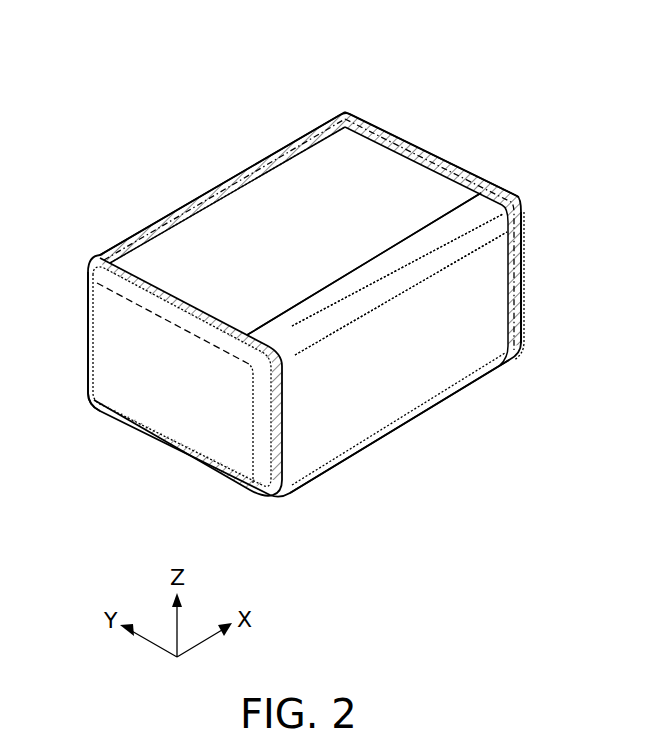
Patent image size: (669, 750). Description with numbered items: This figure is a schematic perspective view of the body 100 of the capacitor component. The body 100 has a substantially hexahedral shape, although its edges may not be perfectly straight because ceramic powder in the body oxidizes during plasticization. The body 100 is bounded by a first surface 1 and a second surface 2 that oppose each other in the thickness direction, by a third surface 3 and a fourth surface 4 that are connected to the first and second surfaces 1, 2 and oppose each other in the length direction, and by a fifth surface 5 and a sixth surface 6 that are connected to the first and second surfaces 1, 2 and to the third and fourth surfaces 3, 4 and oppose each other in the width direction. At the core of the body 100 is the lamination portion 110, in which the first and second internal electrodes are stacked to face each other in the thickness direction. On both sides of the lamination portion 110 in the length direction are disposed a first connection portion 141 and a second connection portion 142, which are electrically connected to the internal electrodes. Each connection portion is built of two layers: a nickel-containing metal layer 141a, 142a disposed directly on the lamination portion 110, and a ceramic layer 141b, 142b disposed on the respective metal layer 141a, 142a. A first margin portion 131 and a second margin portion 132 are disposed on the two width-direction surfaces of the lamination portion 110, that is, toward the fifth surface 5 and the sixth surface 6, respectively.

The body 100 is at (93, 35).
The lamination portion 110 is at (297, 183).
The first surface 1 is at (343, 470).
The second surface 2 is at (340, 148).
The third surface 3 is at (102, 360).
The fourth surface 4 is at (538, 230).
The fifth surface 5 is at (425, 383).
The sixth surface 6 is at (243, 150).
The first margin portion 131 is at (478, 198).
The second margin portion 132 is at (190, 212).
The first connection portion 141 is at (140, 182).
The metal layer 141a is at (100, 273).
The ceramic layer 141b is at (86, 248).
The second connection portion 142 is at (517, 84).
The metal layer 142a is at (410, 150).
The ceramic layer 142b is at (470, 203).